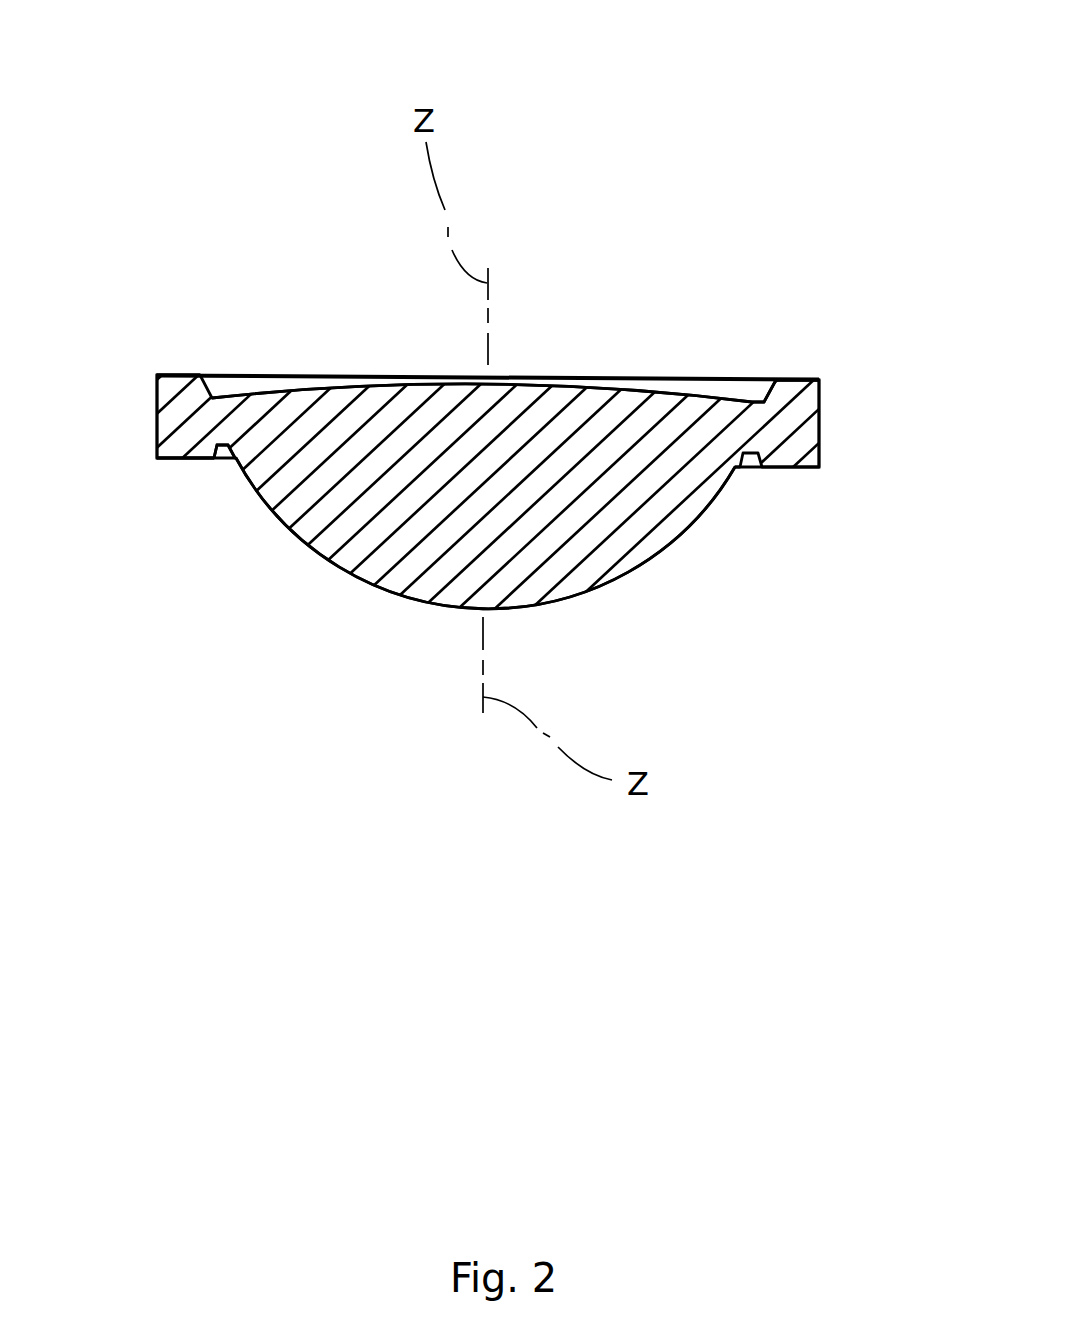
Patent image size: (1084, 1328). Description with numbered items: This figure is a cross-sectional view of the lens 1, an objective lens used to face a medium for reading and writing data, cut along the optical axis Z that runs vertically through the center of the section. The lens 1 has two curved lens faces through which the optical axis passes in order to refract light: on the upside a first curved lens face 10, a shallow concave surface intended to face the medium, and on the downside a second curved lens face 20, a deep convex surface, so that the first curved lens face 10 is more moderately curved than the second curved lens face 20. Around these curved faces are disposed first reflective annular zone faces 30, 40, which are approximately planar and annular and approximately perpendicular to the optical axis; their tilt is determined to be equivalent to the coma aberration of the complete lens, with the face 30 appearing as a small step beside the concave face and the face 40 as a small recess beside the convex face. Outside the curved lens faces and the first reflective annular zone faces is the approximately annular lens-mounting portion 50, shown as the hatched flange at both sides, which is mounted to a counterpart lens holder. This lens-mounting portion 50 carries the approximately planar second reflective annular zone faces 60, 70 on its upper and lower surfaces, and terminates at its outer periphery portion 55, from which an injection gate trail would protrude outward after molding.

The lens 1 is at (808, 140).
The first curved lens face 10 is at (702, 380).
The second curved lens face 20 is at (362, 578).
The first reflective annular zone face 30 is at (751, 400).
The first reflective annular zone face 40 is at (217, 462).
The lens-mounting portion 50 is at (805, 432).
The periphery portion 55 is at (157, 410).
The second reflective annular zone face 60 is at (795, 380).
The second reflective annular zone face 70 is at (175, 460).